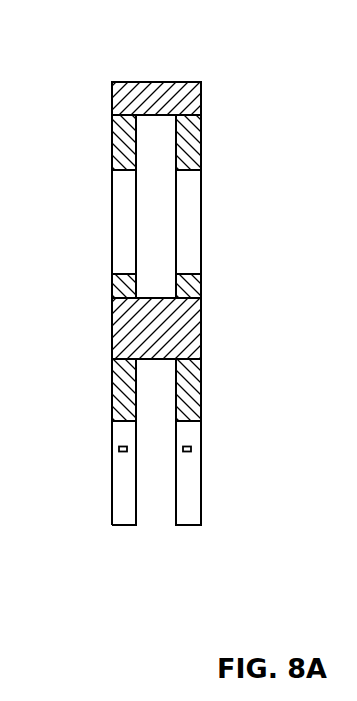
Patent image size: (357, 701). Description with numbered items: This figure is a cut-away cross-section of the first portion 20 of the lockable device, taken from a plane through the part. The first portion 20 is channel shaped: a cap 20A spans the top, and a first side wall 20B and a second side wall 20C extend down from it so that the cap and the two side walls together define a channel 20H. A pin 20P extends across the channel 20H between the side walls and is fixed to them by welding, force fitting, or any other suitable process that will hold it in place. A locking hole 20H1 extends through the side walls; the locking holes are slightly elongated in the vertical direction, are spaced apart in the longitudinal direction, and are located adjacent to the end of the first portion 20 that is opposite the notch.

The first portion 20 is at (81, 338).
The cap 20A is at (157, 82).
The locking hole 20H1 is at (127, 225).
The pin 20P is at (201, 328).
The first side wall 20B is at (201, 390).
The second side wall 20C is at (112, 460).
The channel 20H is at (158, 485).